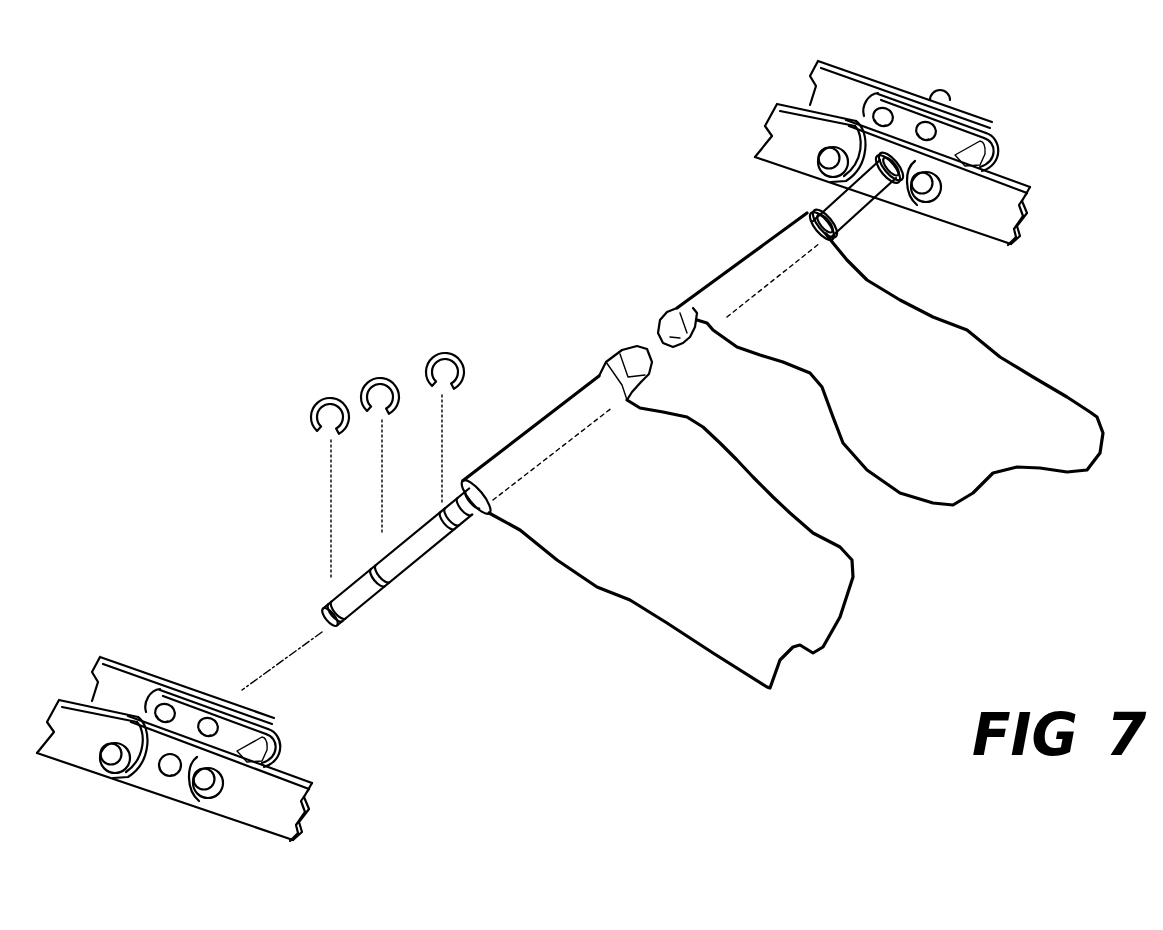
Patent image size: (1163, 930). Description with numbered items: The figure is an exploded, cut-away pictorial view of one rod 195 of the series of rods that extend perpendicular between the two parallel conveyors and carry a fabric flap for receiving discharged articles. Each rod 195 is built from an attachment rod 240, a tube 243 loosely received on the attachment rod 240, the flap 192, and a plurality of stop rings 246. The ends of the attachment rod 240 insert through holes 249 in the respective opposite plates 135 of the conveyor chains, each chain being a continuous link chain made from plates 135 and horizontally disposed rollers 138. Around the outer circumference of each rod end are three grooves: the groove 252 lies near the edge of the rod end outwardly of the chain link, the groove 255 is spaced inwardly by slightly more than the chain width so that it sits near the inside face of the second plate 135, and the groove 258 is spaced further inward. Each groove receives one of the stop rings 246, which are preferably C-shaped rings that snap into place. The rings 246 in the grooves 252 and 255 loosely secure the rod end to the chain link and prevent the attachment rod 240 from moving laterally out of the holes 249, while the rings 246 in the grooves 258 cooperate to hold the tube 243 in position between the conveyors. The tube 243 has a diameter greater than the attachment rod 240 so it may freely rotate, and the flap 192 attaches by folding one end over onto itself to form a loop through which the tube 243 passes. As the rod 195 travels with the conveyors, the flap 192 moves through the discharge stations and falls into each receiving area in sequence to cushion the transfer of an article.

The plates 135 is at (260, 817).
The rollers 138 is at (253, 747).
The flap 192 is at (662, 607).
The rod 195 is at (558, 296).
The attachment rod 240 is at (377, 604).
The tube 243 is at (634, 388).
The stop rings 246 is at (317, 408).
The holes 249 is at (162, 773).
The groove 252 is at (357, 623).
The groove 255 is at (392, 578).
The grooves 258 is at (467, 530).